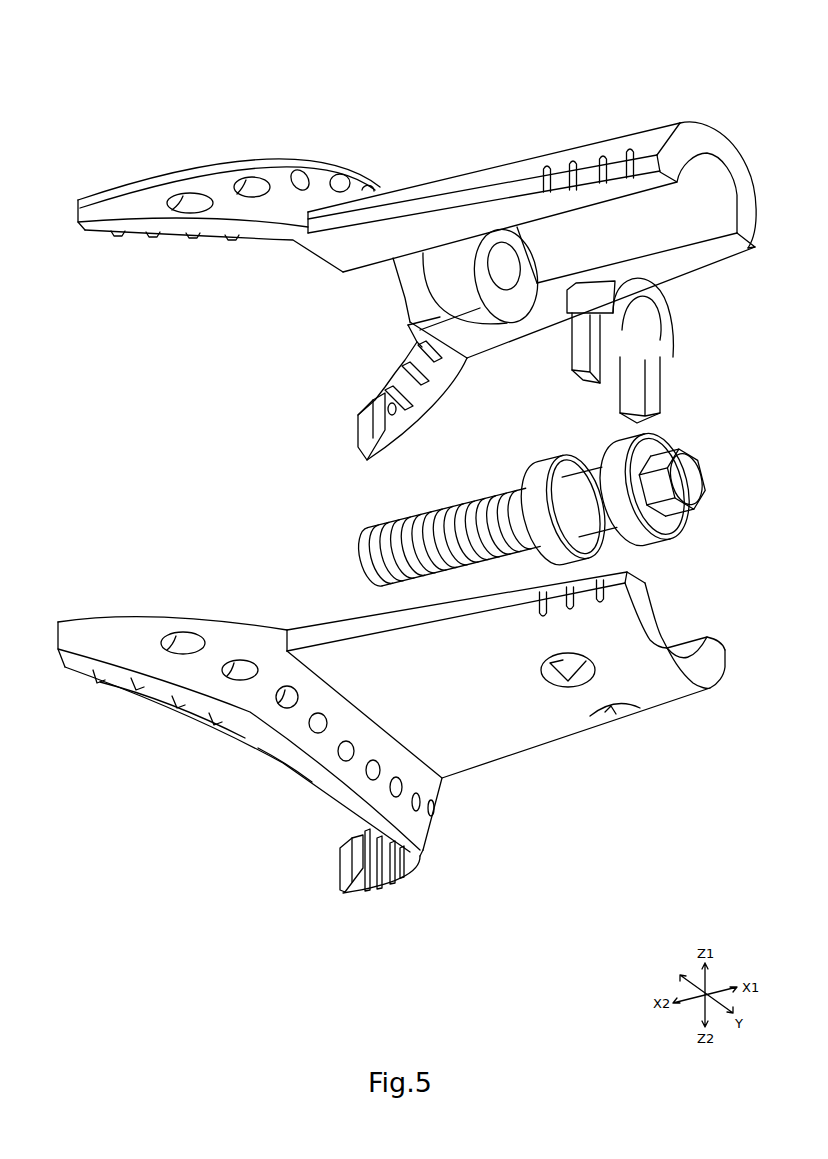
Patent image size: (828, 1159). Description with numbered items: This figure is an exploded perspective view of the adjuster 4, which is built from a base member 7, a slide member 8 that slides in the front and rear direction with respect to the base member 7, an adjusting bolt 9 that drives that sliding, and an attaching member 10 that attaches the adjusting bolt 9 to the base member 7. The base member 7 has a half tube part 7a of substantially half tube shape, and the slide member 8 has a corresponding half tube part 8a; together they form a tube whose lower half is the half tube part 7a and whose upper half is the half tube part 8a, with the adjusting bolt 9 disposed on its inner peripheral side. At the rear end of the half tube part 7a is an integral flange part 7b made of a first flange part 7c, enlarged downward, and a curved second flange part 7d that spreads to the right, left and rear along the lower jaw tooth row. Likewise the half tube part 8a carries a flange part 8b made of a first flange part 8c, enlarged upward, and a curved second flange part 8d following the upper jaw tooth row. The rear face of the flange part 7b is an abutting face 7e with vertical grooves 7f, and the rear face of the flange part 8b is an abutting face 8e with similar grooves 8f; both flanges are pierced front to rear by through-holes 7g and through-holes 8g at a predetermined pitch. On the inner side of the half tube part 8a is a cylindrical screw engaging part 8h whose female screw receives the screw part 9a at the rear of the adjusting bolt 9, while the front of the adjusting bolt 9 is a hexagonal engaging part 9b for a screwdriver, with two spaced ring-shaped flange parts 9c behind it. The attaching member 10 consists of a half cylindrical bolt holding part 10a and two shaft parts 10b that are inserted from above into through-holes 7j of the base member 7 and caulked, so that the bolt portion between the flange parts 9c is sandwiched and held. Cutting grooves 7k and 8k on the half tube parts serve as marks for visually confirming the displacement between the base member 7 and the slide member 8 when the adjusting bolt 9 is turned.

The adjuster 4 is at (684, 48).
The base member 7 is at (506, 711).
The half tube part 7a is at (522, 760).
The flange part 7b is at (237, 759).
The first flange part 7c is at (327, 797).
The second flange part 7d is at (120, 613).
The abutting face 7e is at (340, 876).
The grooves 7f is at (140, 688).
The through-holes 7g is at (240, 670).
The through-holes 7j is at (553, 687).
The cutting grooves 7k is at (545, 618).
The slide member 8 is at (532, 240).
The half tube part 8a is at (472, 172).
The flange part 8b is at (246, 181).
The first flange part 8c is at (380, 188).
The second flange part 8d is at (210, 162).
The abutting face 8e is at (362, 432).
The grooves 8f is at (117, 236).
The through-holes 8g is at (189, 201).
The screw engaging part 8h is at (400, 295).
The cutting grooves 8k is at (547, 168).
The adjusting bolt 9 is at (358, 561).
The screw part 9a is at (485, 528).
The engaging part 9b is at (672, 482).
The flange parts 9c is at (605, 499).
The attaching member 10 is at (663, 317).
The bolt holding part 10a is at (675, 330).
The shaft parts 10b is at (570, 357).